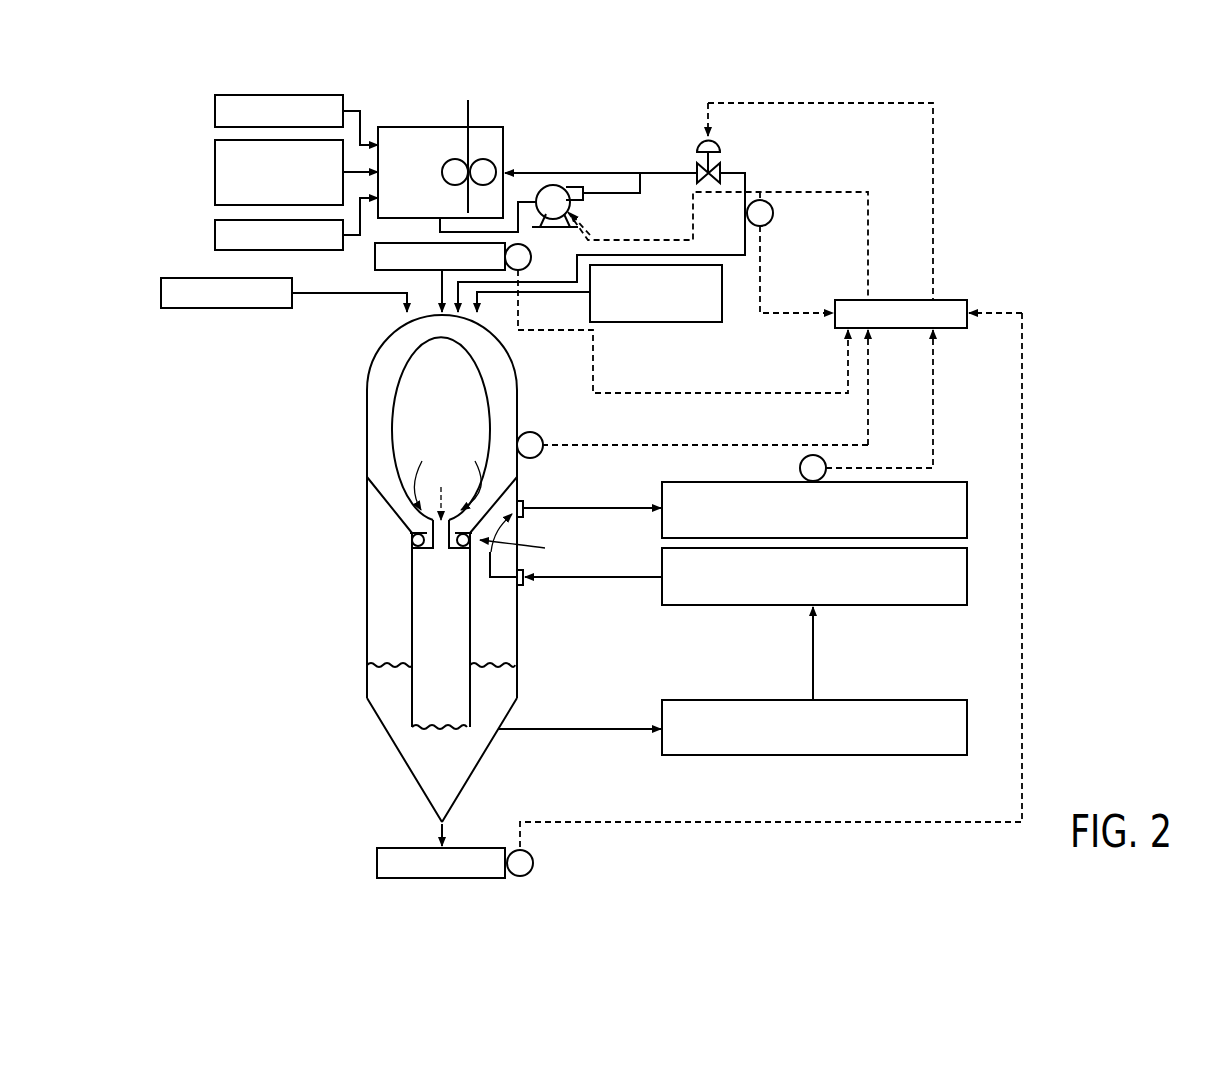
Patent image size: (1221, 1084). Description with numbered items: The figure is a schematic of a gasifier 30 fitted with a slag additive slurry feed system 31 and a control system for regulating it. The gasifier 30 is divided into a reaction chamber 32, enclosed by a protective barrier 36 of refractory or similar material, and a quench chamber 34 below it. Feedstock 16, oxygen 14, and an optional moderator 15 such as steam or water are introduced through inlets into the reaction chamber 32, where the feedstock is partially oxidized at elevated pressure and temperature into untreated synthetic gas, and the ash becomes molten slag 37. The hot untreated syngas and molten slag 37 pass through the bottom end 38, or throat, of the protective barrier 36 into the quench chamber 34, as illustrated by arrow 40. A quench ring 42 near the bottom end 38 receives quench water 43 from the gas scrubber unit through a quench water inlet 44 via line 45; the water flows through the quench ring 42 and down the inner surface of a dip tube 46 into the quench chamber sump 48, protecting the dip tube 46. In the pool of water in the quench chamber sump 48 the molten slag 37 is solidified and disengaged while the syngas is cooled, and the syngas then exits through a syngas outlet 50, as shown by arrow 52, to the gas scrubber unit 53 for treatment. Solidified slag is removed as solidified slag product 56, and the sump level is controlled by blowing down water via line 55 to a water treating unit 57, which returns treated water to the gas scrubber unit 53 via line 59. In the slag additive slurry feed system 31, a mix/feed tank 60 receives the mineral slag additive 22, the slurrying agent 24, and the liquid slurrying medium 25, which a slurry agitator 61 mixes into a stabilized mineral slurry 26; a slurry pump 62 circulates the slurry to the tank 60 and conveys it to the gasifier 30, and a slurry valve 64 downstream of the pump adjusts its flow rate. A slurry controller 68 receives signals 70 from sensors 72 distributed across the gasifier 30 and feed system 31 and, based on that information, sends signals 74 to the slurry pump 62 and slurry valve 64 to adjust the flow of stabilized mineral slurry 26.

The oxygen 14 is at (161, 292).
The optional moderator 15 is at (660, 322).
The feedstock 16 is at (375, 262).
The mineral slag additive 22 is at (215, 112).
The slurrying agent 24 is at (215, 172).
The liquid slurrying medium 25 is at (215, 235).
The stabilized mineral slurry 26 is at (469, 184).
The gasifier 30 is at (357, 781).
The slag additive slurry feed system 31 is at (572, 131).
The reaction chamber 32 is at (345, 385).
The quench chamber 34 is at (348, 660).
The protective barrier 36 is at (507, 378).
The molten slag 37 is at (450, 472).
The bottom end 38 is at (405, 510).
The arrow 40 is at (442, 490).
The quench ring 42 is at (412, 540).
The quench water 43 is at (967, 578).
The quench water inlet 44 is at (523, 583).
The line 45 is at (497, 578).
The dip tube 46 is at (470, 598).
The quench chamber sump 48 is at (450, 755).
The syngas outlet 50 is at (522, 505).
The arrow 52 is at (526, 547).
The gas scrubber unit 53 is at (967, 510).
The line 55 is at (572, 727).
The solidified slag product 56 is at (377, 862).
The water treating unit 57 is at (812, 755).
The line 59 is at (815, 656).
The mix/feed tank 60 is at (503, 163).
The slurry agitator 61 is at (470, 112).
The slurry pump 62 is at (570, 206).
The slurry valve 64 is at (697, 173).
The slurry controller 68 is at (898, 328).
The signals 70 is at (795, 313).
The sensors 72 is at (800, 468).
The signals 74 is at (868, 245).